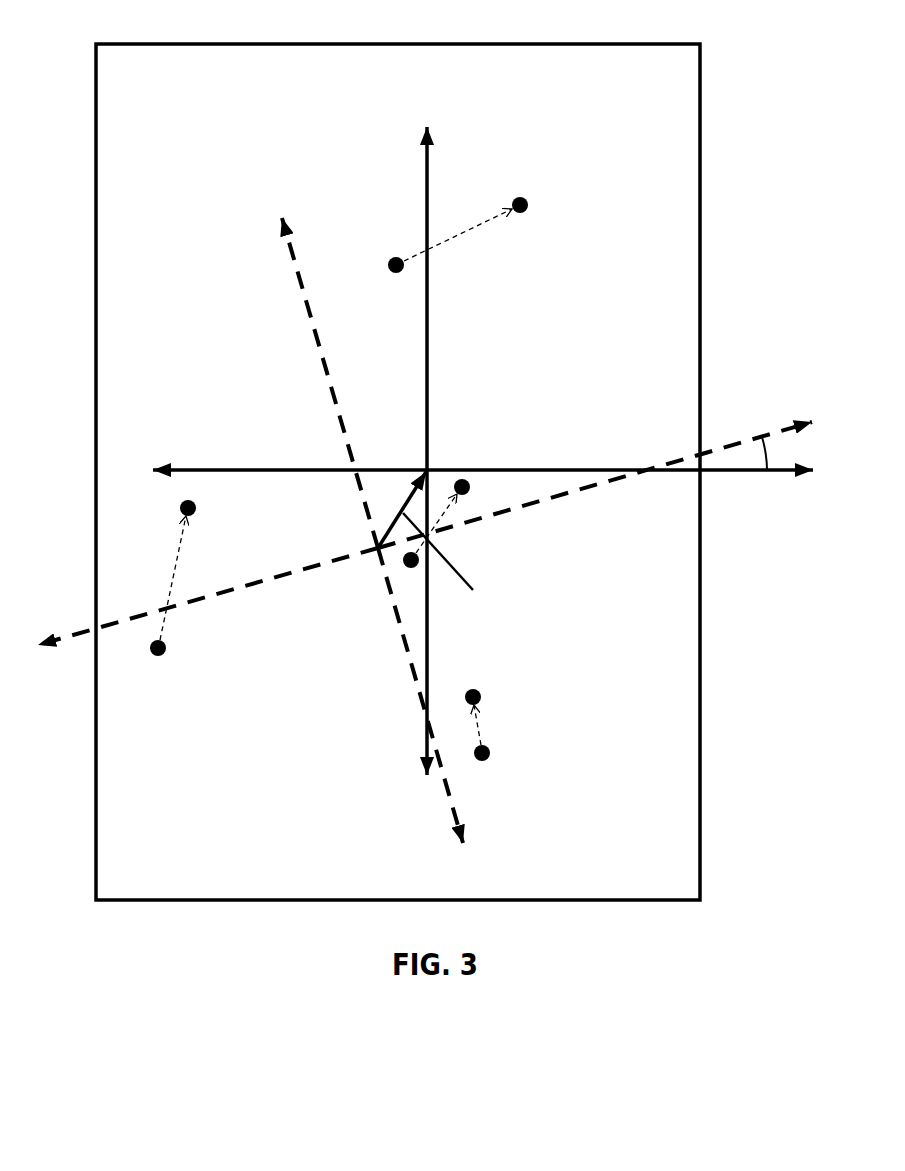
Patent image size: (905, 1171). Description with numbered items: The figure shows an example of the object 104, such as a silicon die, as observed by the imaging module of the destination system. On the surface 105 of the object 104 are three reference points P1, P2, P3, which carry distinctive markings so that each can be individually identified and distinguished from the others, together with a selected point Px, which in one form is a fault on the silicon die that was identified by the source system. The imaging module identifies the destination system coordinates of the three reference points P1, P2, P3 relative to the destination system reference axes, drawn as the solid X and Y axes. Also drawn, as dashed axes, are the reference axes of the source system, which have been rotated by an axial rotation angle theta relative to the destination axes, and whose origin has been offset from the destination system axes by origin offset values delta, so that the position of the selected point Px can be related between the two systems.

The object 104 is at (702, 227).
The surface 105 is at (192, 115).
The reference point P1 is at (184, 514).
The reference point P2 is at (525, 200).
The reference point P3 is at (479, 692).
The selected point Px is at (468, 482).